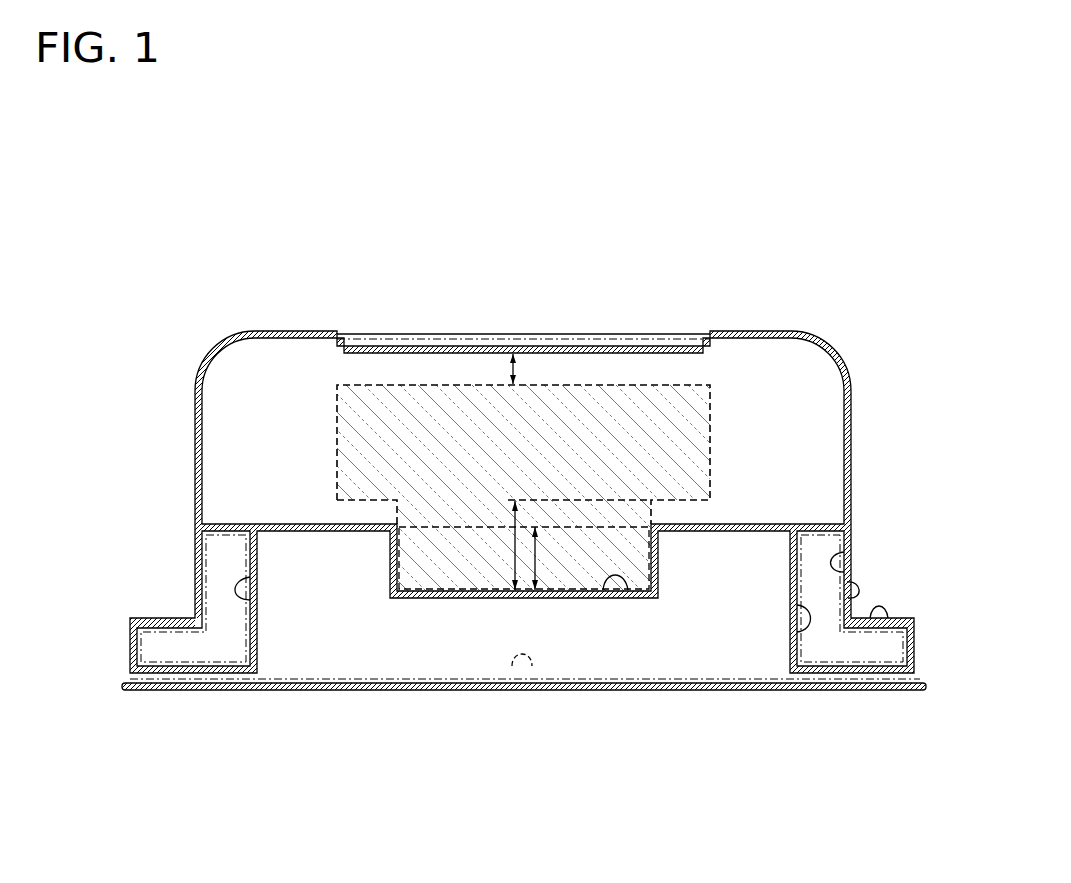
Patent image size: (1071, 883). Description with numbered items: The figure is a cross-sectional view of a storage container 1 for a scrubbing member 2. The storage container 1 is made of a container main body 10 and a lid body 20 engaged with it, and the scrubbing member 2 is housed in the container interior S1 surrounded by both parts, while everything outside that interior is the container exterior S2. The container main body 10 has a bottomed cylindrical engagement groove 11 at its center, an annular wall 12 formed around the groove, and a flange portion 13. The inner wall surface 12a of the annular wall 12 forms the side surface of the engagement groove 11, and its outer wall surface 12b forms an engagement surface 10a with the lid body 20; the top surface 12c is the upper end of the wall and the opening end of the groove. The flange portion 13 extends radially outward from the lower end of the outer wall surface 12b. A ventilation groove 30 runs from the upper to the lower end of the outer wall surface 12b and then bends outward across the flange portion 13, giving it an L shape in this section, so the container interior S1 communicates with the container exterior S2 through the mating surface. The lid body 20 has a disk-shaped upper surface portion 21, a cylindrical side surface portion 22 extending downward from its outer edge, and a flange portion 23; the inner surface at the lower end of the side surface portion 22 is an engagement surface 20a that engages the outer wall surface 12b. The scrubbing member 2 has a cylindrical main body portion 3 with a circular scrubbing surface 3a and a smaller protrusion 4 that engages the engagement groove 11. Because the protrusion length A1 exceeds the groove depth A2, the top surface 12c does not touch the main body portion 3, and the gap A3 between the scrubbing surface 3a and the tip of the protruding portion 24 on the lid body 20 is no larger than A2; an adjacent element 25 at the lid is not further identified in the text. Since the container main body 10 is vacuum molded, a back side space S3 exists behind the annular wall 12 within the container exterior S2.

The storage container 1 is at (163, 257).
The scrubbing member 2 is at (324, 397).
The main body portion 3 is at (337, 447).
The scrubbing surface 3a is at (485, 385).
The protrusion 4 is at (398, 508).
The container main body 10 is at (522, 533).
The engagement surface 10a is at (797, 636).
The engagement groove 11 is at (614, 592).
The annular wall 12 is at (737, 516).
The inner wall surface 12a is at (658, 545).
The outer wall surface 12b is at (847, 597).
The top surface 12c is at (653, 500).
The flange portion 13 is at (879, 612).
The lid body 20 is at (537, 440).
The engagement surface 20a is at (846, 560).
The upper surface portion 21 is at (727, 330).
The side surface portion 22 is at (851, 468).
The flange portion 23 is at (893, 618).
The protruding portion 24 is at (441, 350).
The sheet 25 is at (443, 346).
The ventilation groove 30 is at (255, 578).
The length of protrusion A1 is at (512, 560).
The depth of engagement groove A2 is at (538, 560).
The gap A3 is at (513, 356).
The container interior S1 is at (254, 402).
The container exterior S2 is at (147, 407).
The back side space S3 is at (415, 640).